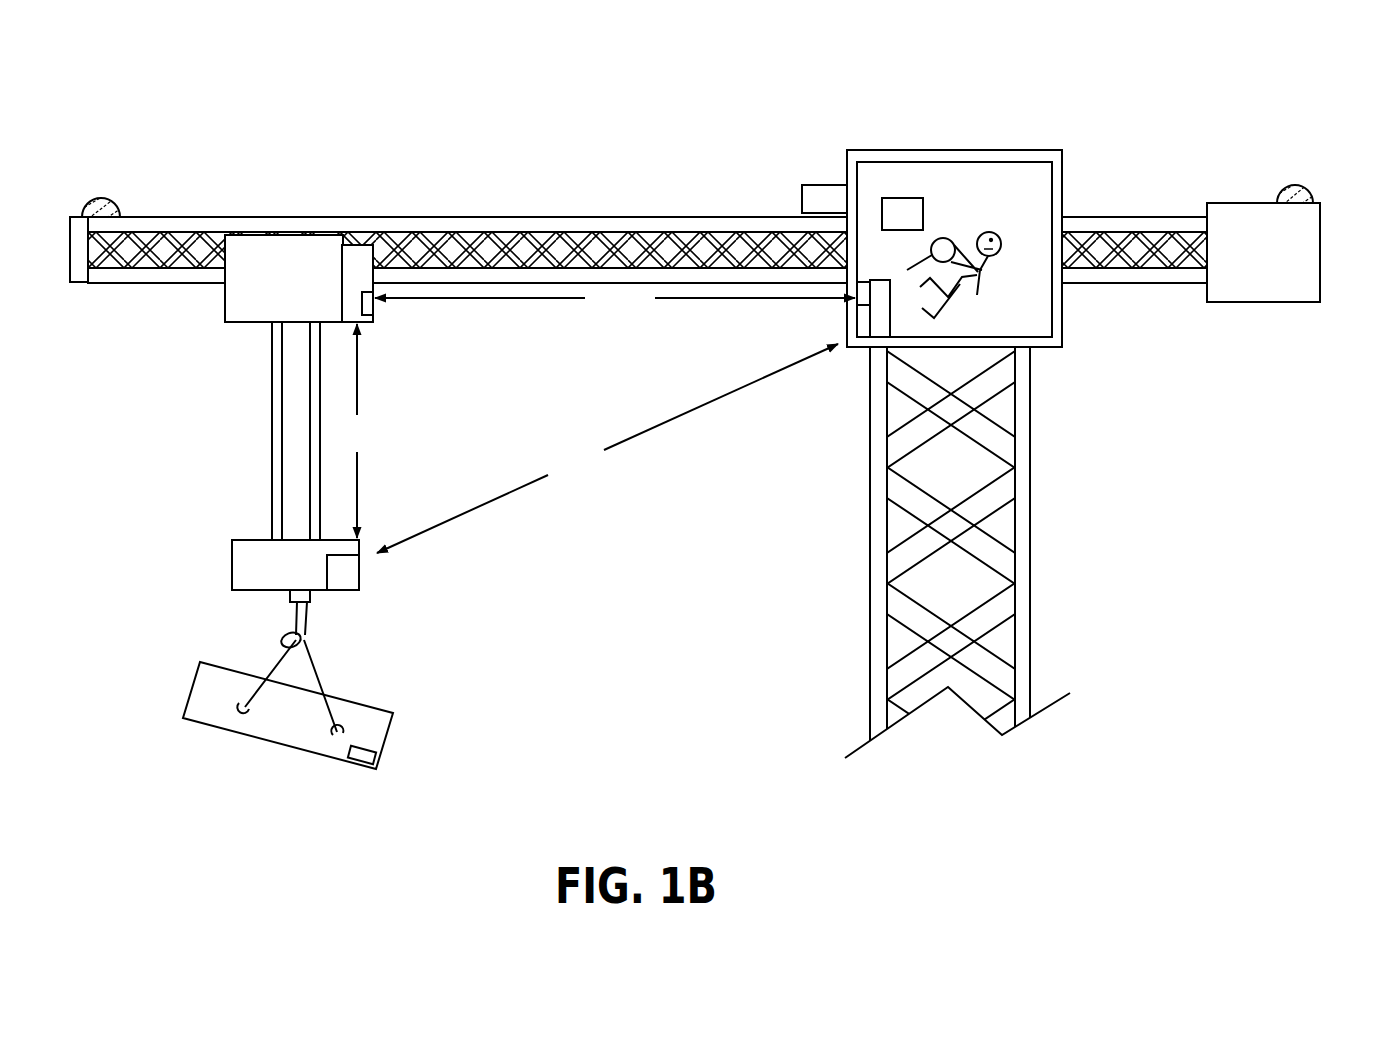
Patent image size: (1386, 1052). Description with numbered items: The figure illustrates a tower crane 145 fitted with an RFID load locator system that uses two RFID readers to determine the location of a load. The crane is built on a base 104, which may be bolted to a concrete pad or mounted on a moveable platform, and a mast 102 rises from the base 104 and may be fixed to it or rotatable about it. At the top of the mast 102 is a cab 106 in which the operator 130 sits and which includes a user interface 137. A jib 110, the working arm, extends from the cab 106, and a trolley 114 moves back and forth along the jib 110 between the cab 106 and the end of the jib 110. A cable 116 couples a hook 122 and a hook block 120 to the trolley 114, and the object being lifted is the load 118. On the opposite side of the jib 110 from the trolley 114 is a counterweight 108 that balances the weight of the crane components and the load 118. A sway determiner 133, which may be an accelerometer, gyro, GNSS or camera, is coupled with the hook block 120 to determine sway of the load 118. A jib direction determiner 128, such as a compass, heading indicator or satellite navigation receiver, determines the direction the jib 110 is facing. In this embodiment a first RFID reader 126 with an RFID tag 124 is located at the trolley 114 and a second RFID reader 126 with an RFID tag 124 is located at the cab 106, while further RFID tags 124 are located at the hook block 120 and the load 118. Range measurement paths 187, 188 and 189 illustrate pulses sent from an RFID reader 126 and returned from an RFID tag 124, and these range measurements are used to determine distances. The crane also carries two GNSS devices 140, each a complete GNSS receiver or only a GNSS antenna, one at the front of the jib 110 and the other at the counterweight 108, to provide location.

The tower crane 145 is at (633, 32).
The mast 102 is at (1030, 558).
The base 104 is at (1050, 706).
The cab 106 is at (1064, 160).
The counterweight 108 is at (1228, 203).
The jib 110 is at (590, 216).
The trolley 114 is at (225, 305).
The cable 116 is at (272, 425).
The load 118 is at (192, 685).
The hook block 120 is at (232, 585).
The hook 122 is at (308, 640).
The RFID tag 124 is at (376, 316).
The RFID reader 126 is at (363, 247).
The jib direction determiner 128 is at (798, 200).
The operator 130 is at (985, 232).
The sway determiner 133 is at (345, 583).
The user interface 137 is at (898, 198).
The GNSS device 140 is at (113, 197).
The range measurement path 187 is at (607, 448).
The range measurement path 188 is at (360, 431).
The range measurement path 189 is at (615, 299).